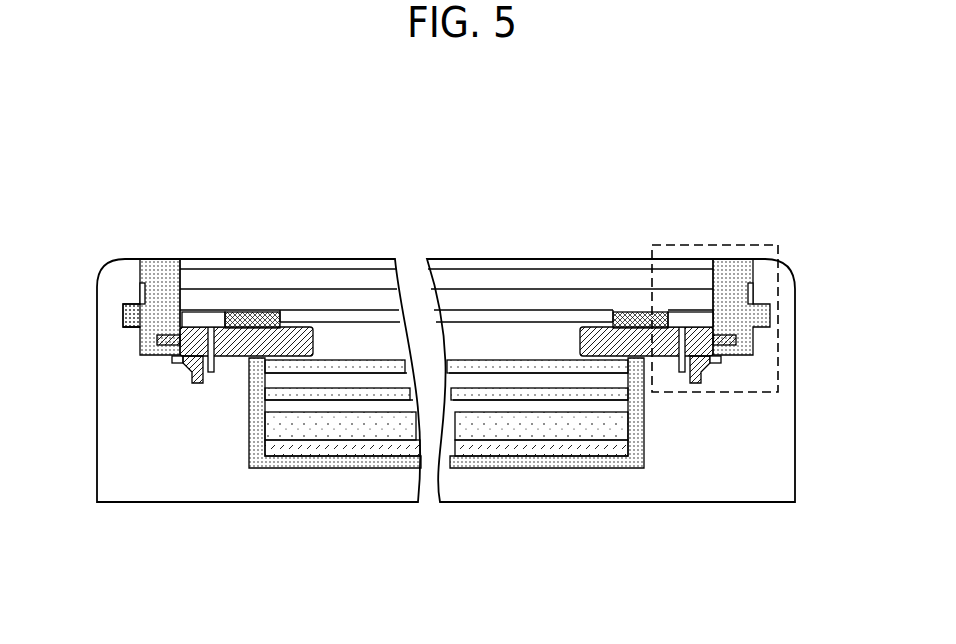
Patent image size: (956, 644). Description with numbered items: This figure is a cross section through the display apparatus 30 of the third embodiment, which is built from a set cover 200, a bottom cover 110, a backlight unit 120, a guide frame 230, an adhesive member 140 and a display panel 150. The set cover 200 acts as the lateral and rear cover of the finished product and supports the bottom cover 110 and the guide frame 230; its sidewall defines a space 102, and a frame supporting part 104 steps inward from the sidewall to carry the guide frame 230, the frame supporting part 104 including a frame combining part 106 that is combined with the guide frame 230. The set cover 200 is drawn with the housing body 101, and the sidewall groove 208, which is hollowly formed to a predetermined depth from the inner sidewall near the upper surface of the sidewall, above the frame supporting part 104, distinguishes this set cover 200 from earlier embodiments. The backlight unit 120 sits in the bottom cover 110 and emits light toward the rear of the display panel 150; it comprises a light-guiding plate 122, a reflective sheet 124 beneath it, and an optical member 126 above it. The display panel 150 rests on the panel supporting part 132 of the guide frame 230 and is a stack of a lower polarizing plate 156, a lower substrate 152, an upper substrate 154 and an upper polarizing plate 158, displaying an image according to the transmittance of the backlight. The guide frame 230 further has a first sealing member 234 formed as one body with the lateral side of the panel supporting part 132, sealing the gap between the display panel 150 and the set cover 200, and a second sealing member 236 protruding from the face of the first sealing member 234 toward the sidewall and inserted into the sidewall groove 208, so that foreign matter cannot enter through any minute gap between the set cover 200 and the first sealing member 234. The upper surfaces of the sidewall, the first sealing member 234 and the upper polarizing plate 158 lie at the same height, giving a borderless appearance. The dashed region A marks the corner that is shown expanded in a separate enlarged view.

The display apparatus 30 is at (57, 183).
The housing 101 is at (108, 313).
The space 102 is at (242, 509).
The frame supporting part 104 is at (153, 355).
The frame combining part 106 is at (207, 405).
The sidewall groove 208 is at (128, 330).
The set cover 200 is at (427, 423).
The guide frame 230 is at (208, 193).
The first sealing member 234 is at (162, 275).
The second sealing member 236 is at (135, 307).
The panel supporting part 132 is at (200, 340).
The display panel 150 is at (556, 193).
The upper polarizing plate 158 is at (440, 263).
The upper substrate 154 is at (480, 278).
The lower substrate 152 is at (518, 297).
The lower polarizing plate 156 is at (567, 315).
The adhesive member 140 is at (628, 310).
The bottom cover 110 is at (352, 462).
The backlight unit 120 is at (480, 541).
The optical member 126 is at (502, 407).
The light-guiding plate 122 is at (527, 428).
The reflective sheet 124 is at (567, 447).
The region A is at (778, 243).